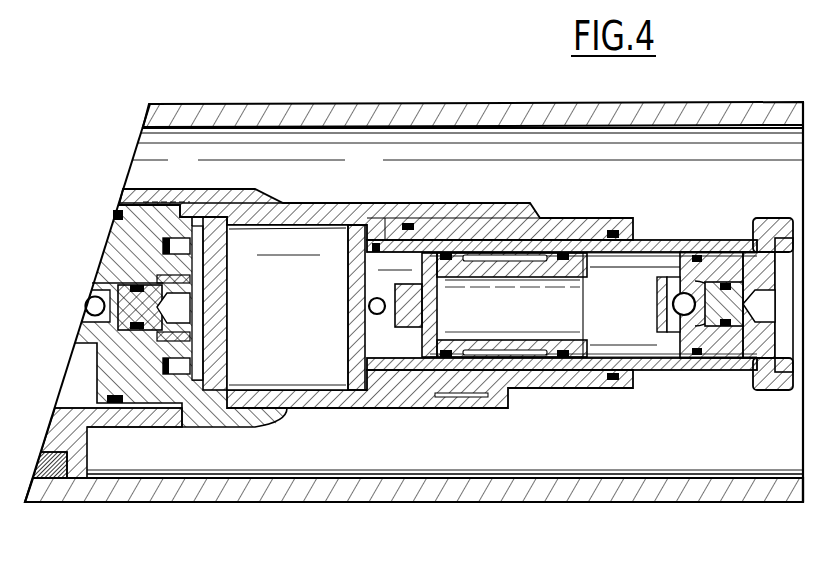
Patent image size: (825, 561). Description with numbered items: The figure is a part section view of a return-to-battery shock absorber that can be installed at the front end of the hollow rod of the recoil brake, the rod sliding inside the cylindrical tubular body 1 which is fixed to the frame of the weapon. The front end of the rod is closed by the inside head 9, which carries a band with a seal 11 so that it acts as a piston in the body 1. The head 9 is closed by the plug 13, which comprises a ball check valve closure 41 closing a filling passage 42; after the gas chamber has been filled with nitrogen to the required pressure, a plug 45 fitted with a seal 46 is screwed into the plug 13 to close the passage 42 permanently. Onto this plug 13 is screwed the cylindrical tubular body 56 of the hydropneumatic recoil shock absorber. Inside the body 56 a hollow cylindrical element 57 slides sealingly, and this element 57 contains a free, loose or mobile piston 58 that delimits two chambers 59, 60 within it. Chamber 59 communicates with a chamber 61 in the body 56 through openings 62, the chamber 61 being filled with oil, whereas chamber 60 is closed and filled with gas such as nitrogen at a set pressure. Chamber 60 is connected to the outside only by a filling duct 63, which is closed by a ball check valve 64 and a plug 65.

The cylindrical tubular body 1 is at (333, 490).
The inside head 9 is at (63, 422).
The seal 11 is at (47, 480).
The plug 13 is at (140, 373).
The ball check valve closure 41 is at (88, 302).
The filling passage 42 is at (103, 267).
The plug 45 is at (143, 304).
The seal 46 is at (133, 283).
The cylindrical tubular body 56 is at (410, 203).
The hollow cylindrical element 57 is at (665, 243).
The free piston 58 is at (440, 323).
The chamber 59 is at (400, 319).
The chamber 60 is at (635, 306).
The chamber 61 is at (287, 307).
The openings 62 is at (369, 303).
The filling duct 63 is at (682, 343).
The ball check valve 64 is at (672, 303).
The plug 65 is at (744, 372).